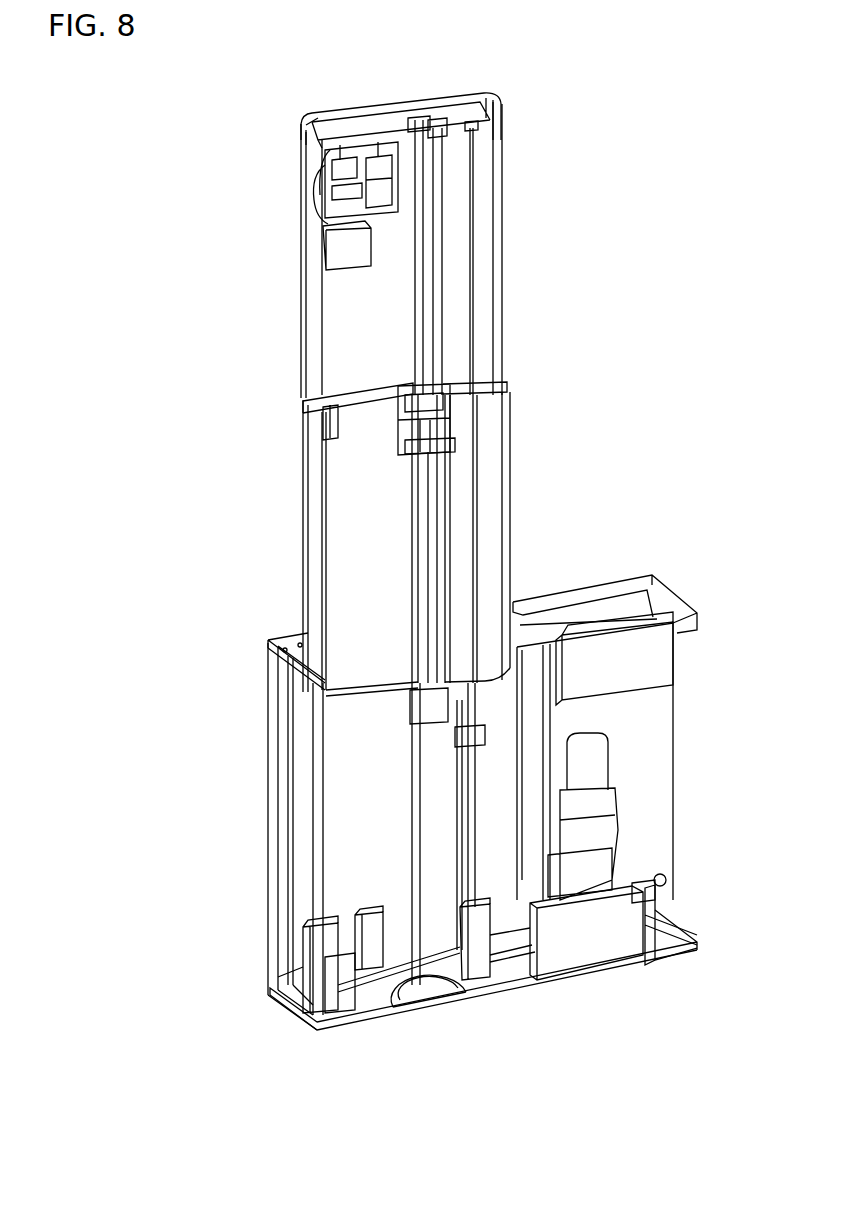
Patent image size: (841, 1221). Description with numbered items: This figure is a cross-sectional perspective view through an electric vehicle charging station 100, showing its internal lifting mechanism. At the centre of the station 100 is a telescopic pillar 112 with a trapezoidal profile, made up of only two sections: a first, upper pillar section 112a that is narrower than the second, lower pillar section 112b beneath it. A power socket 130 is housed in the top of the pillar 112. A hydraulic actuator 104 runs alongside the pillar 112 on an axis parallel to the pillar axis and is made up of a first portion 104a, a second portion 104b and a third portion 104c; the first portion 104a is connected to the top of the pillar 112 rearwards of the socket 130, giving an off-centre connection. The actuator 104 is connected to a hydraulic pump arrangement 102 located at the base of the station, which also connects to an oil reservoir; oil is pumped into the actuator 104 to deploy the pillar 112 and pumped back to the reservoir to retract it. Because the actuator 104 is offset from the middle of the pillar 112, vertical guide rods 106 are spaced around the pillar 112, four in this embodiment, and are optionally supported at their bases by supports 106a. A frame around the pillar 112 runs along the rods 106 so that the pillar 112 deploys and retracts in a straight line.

The electric vehicle charging station 100 is at (138, 203).
The hydraulic pump arrangement 102 is at (673, 993).
The hydraulic actuator 104 is at (457, 1024).
The first portion of the actuator 104a is at (437, 250).
The second portion of the actuator 104b is at (447, 523).
The third portion of the actuator 104c is at (403, 967).
The vertical guide rods 106 is at (313, 810).
The supports 106a is at (290, 952).
The telescopic pillar 112 is at (290, 422).
The first pillar section 112a is at (502, 201).
The second pillar section 112b is at (510, 445).
The power socket 130 is at (271, 176).